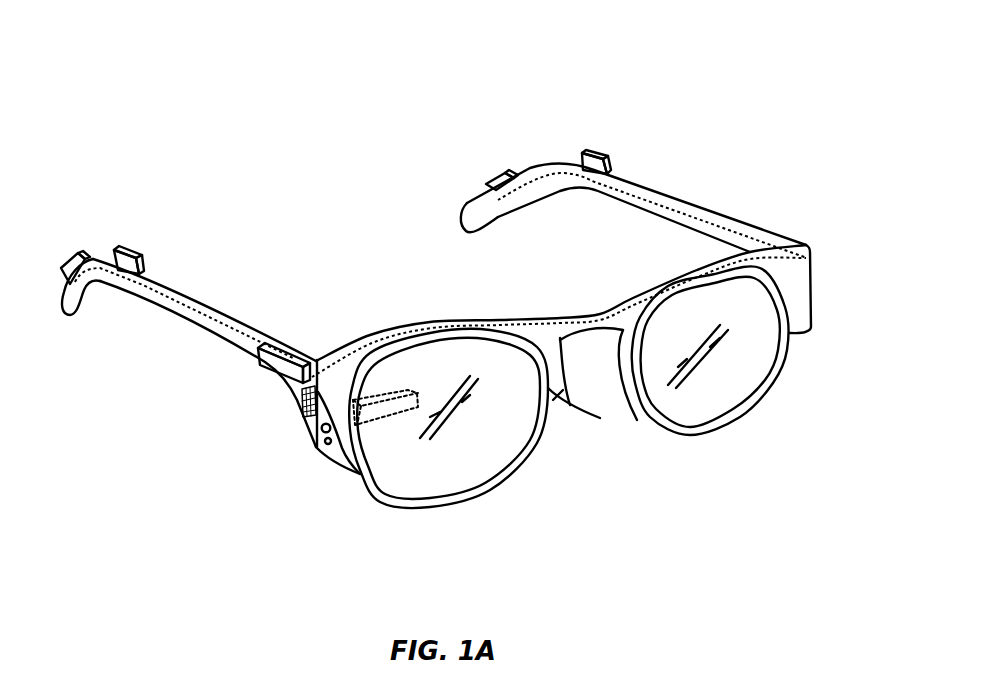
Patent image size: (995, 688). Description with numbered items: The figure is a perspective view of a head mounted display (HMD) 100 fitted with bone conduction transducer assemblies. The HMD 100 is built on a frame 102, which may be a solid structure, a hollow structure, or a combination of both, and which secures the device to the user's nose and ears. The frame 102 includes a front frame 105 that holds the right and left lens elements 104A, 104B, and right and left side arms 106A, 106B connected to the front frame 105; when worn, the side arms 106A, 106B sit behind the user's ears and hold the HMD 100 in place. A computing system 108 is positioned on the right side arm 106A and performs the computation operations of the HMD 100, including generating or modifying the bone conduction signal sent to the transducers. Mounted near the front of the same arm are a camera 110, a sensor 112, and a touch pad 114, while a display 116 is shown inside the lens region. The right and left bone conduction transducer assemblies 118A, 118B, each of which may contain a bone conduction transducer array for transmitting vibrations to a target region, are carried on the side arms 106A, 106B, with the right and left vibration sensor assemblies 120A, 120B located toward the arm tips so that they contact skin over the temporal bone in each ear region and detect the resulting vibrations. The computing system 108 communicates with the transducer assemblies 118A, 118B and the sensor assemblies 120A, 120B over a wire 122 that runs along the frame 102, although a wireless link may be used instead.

The head mounted display 100 is at (336, 190).
The frame 102 is at (592, 318).
The right lens element 104A is at (473, 480).
The left lens element 104B is at (723, 408).
The front frame 105 is at (553, 392).
The right side arm 106A is at (175, 312).
The left side arm 106B is at (683, 207).
The computing system 108 is at (282, 352).
The camera 110 is at (322, 435).
The sensor 112 is at (328, 446).
The touch pad 114 is at (299, 414).
The display 116 is at (382, 397).
The right bone conduction transducer assembly 118A is at (116, 253).
The left bone conduction transducer assembly 118B is at (594, 151).
The right vibration sensor assembly 120A is at (63, 267).
The left vibration sensor assembly 120B is at (493, 172).
The wire 122 is at (795, 209).